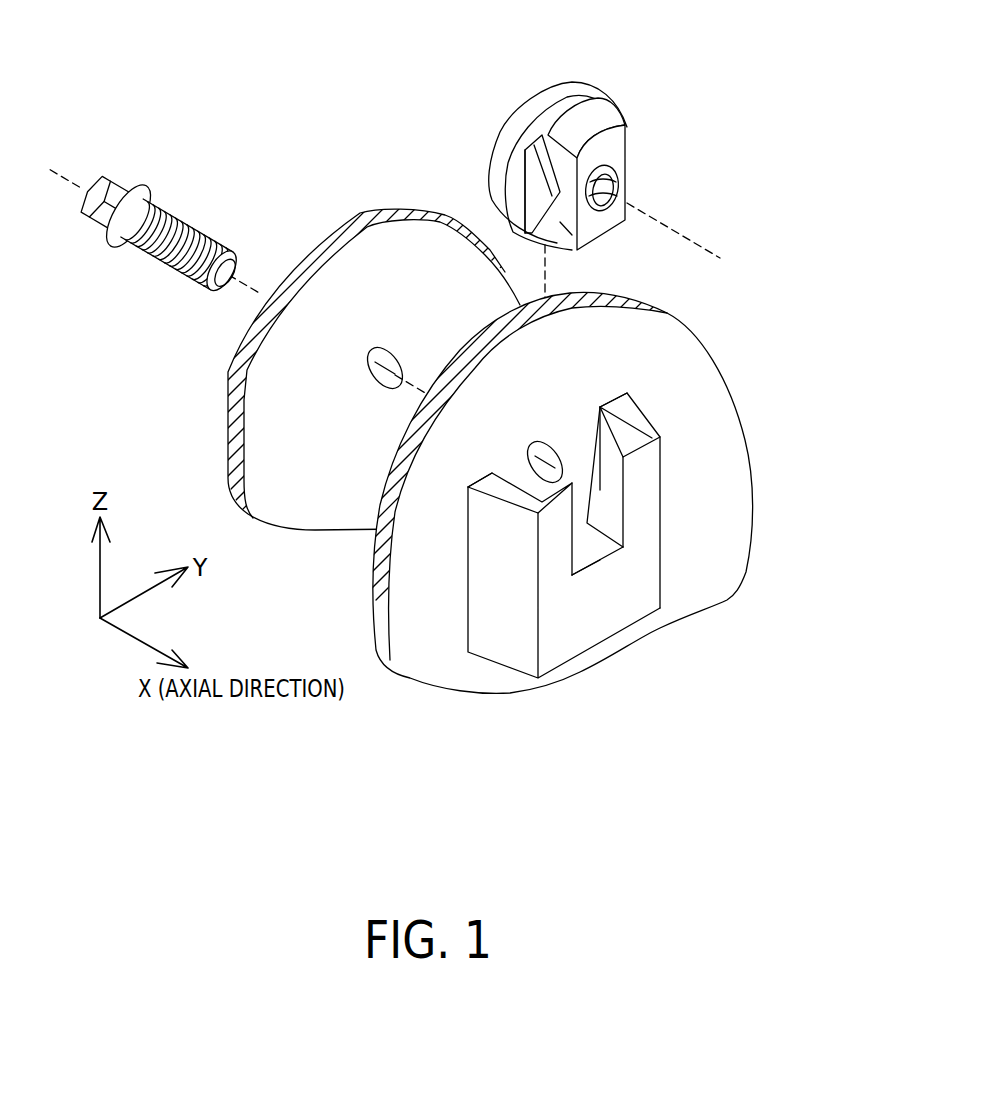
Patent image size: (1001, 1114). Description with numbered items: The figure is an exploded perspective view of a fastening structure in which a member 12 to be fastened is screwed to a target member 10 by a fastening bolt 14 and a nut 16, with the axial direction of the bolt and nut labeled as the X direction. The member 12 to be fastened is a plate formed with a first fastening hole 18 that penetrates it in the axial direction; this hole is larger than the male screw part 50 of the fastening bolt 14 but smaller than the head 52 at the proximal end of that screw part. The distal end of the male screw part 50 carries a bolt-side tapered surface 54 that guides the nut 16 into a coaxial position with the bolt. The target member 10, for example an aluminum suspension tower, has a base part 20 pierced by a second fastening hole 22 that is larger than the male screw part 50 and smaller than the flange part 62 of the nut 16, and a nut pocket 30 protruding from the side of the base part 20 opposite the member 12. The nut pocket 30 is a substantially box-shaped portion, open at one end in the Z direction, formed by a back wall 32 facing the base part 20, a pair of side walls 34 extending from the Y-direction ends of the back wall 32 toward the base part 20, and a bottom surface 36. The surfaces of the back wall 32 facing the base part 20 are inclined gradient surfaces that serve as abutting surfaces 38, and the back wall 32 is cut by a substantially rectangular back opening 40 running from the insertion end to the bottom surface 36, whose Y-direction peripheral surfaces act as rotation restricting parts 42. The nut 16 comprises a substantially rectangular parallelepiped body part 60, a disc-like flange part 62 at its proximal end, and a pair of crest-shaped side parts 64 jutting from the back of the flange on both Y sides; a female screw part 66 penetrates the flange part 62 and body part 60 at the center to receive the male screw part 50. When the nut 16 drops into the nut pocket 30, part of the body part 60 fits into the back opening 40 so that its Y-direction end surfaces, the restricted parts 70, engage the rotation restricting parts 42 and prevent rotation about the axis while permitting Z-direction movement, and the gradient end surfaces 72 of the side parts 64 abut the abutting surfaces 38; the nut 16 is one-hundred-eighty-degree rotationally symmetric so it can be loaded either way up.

The target member 10 is at (500, 412).
The member to be fastened 12 is at (500, 300).
The fastening bolt 14 is at (170, 225).
The nut 16 is at (619, 148).
The first fastening hole 18 is at (400, 363).
The base part 20 is at (500, 403).
The second fastening hole 22 is at (560, 445).
The nut pocket 30 is at (510, 612).
The back wall 32 is at (577, 566).
The side walls 34 is at (505, 489).
The bottom surface 36 is at (553, 537).
The abutting surfaces 38 is at (610, 460).
The back opening 40 is at (712, 623).
The rotation restricting parts 42 is at (597, 561).
The male screw part 50 is at (146, 262).
The head 52 is at (118, 184).
The bolt-side tapered surface 54 is at (230, 250).
The body part 60 is at (608, 135).
The flange part 62 is at (538, 105).
The side parts 64 is at (530, 183).
The female screw part 66 is at (630, 188).
The restricted parts 70 is at (585, 118).
The surfaces to be abutted 72 is at (562, 235).